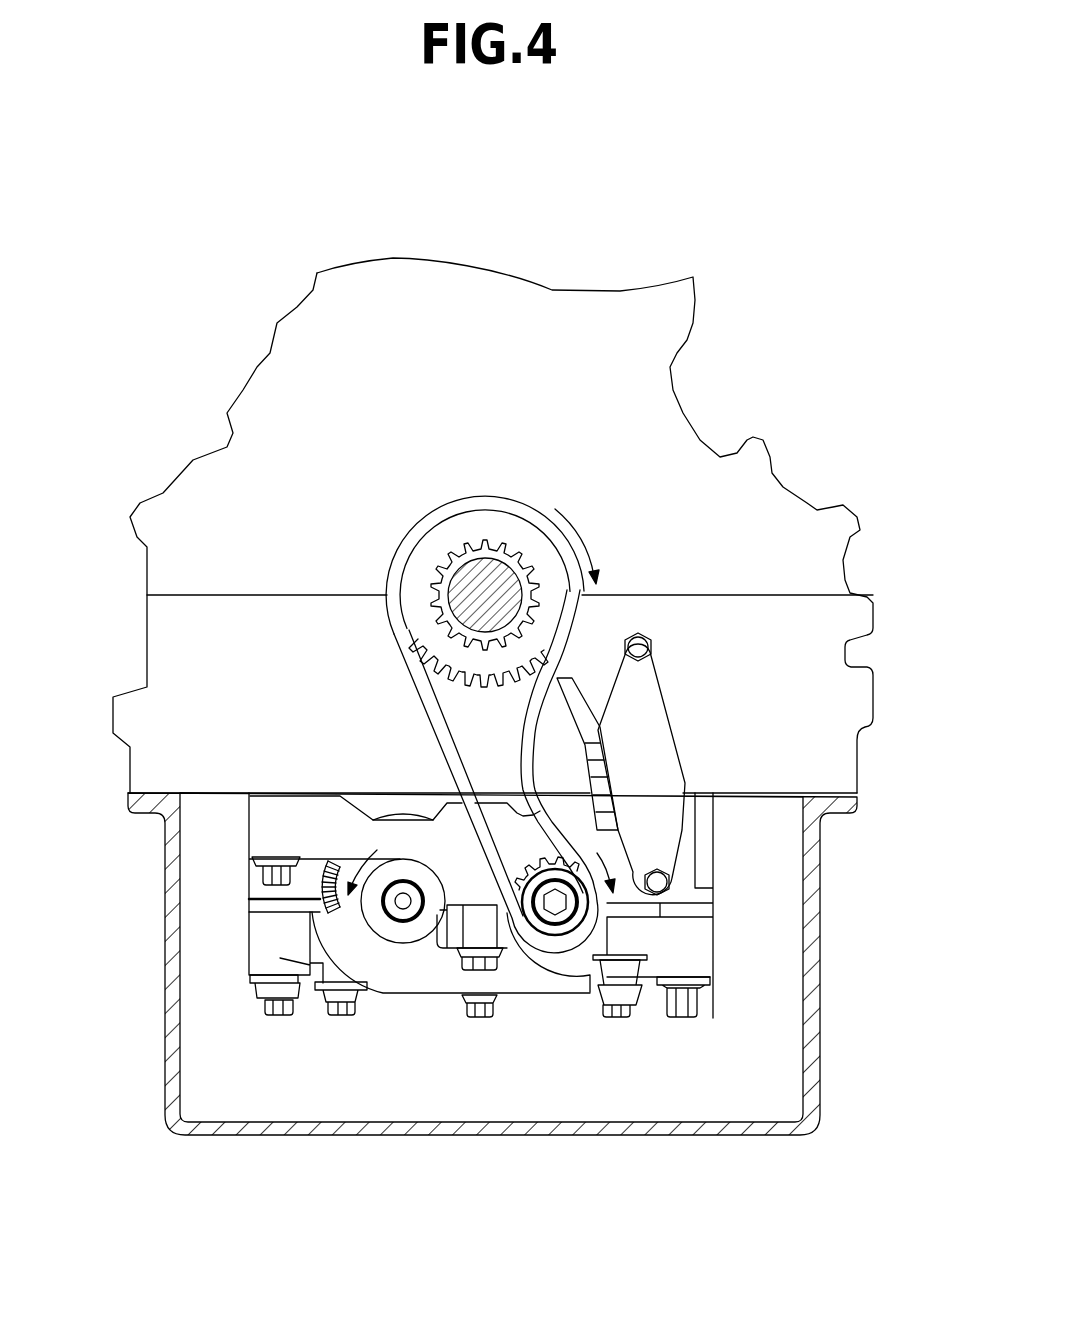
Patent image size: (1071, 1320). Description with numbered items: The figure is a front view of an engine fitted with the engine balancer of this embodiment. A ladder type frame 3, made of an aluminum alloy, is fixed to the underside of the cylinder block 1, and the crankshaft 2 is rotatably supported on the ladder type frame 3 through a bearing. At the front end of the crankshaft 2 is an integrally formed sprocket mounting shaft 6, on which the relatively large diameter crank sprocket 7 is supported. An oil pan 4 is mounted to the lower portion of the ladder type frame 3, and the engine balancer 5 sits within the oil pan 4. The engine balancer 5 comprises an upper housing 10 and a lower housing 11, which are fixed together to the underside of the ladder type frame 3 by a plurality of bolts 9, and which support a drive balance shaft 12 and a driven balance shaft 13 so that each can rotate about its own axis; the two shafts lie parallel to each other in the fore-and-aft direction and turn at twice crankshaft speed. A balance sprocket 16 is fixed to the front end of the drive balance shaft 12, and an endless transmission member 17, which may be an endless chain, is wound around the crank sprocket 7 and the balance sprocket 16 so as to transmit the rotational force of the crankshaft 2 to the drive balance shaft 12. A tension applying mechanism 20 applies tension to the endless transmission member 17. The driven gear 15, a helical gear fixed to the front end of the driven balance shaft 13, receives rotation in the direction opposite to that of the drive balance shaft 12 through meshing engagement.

The cylinder block 1 is at (750, 460).
The crankshaft 2 is at (515, 425).
The sprocket mounting shaft 6 is at (487, 593).
The ladder type frame 3 is at (835, 618).
The oil pan 4 is at (813, 1077).
The engine balancer 5 is at (735, 953).
The crank sprocket 7 is at (455, 530).
The bolts 9 is at (285, 1015).
The upper housing 10 is at (263, 891).
The lower housing 11 is at (260, 943).
The drive balance shaft 12 is at (557, 907).
The driven balance shaft 13 is at (403, 901).
The driven gear 15 is at (353, 908).
The balance sprocket 16 is at (533, 922).
The endless transmission member 17 is at (423, 712).
The tension applying mechanism 20 is at (657, 748).